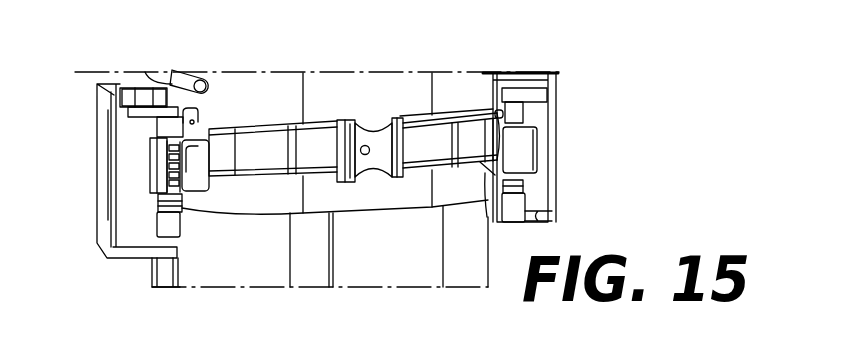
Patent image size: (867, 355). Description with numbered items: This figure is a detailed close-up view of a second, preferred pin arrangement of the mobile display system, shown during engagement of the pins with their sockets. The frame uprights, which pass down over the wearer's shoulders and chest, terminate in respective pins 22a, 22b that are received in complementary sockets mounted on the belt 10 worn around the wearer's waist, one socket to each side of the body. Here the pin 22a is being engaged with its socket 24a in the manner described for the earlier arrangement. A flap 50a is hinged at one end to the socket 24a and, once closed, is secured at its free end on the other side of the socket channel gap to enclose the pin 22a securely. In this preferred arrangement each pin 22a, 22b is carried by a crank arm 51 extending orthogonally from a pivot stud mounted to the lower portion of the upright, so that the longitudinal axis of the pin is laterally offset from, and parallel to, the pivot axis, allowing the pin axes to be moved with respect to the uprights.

The belt 10 is at (432, 150).
The crank arm 51 is at (146, 108).
The flap 50a is at (195, 135).
The socket 24a is at (150, 155).
The pin 22a is at (163, 228).
The pin 22b is at (515, 207).